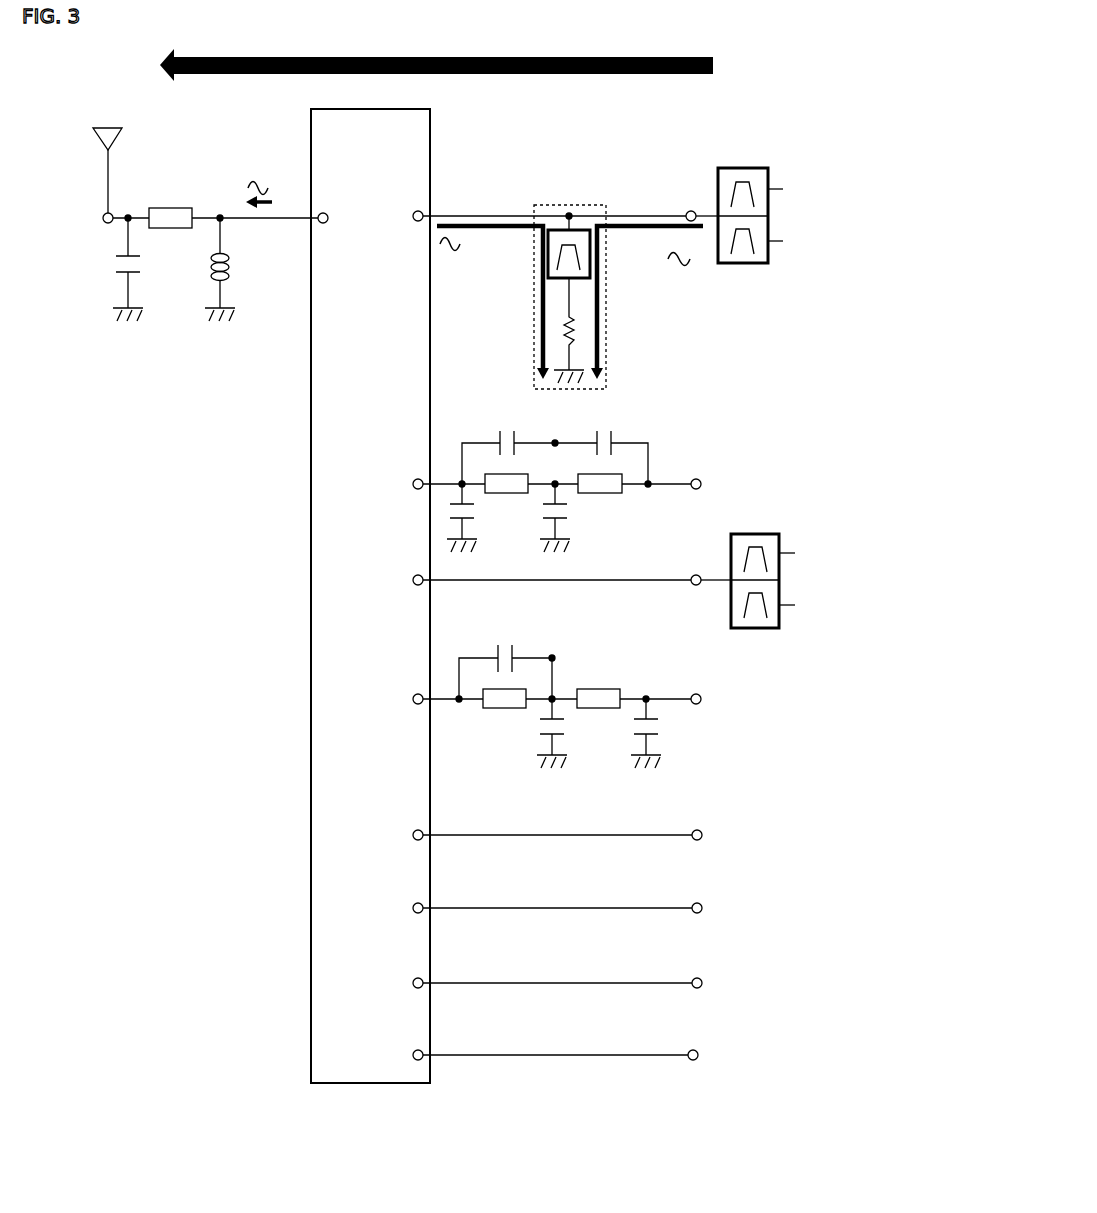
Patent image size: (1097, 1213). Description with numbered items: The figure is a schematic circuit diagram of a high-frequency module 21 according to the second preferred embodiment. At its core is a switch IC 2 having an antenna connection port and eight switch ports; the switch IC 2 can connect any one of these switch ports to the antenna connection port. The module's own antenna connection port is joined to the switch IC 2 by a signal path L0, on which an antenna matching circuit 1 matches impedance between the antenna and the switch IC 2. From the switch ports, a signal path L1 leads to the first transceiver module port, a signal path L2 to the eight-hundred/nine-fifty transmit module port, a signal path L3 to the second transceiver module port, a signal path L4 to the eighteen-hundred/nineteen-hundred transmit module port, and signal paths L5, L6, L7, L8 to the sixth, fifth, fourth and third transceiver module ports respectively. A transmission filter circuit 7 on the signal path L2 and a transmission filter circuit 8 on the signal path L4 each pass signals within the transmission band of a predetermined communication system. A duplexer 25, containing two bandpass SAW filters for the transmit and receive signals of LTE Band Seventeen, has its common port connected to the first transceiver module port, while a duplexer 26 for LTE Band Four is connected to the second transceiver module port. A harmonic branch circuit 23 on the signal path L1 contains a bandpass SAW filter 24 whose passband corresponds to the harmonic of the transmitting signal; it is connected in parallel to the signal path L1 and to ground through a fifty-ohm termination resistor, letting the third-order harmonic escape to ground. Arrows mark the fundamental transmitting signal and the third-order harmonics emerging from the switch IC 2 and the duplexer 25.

The antenna matching circuit 1 is at (171, 188).
The switch IC 2 is at (313, 118).
The transmission filter circuit 7 is at (619, 427).
The transmission filter circuit 8 is at (612, 664).
The high-frequency module 21 is at (200, 551).
The harmonic branch circuit 23 is at (582, 227).
The bandpass SAW filter 24 is at (570, 276).
The duplexer 25 is at (741, 164).
The duplexer 26 is at (778, 624).
The signal path L0 is at (307, 228).
The signal path L1 is at (442, 212).
The signal path L2 is at (685, 477).
The signal path L3 is at (683, 572).
The signal path L4 is at (686, 690).
The signal path L5 is at (685, 825).
The signal path L6 is at (690, 904).
The signal path L7 is at (688, 982).
The signal path L8 is at (683, 1052).